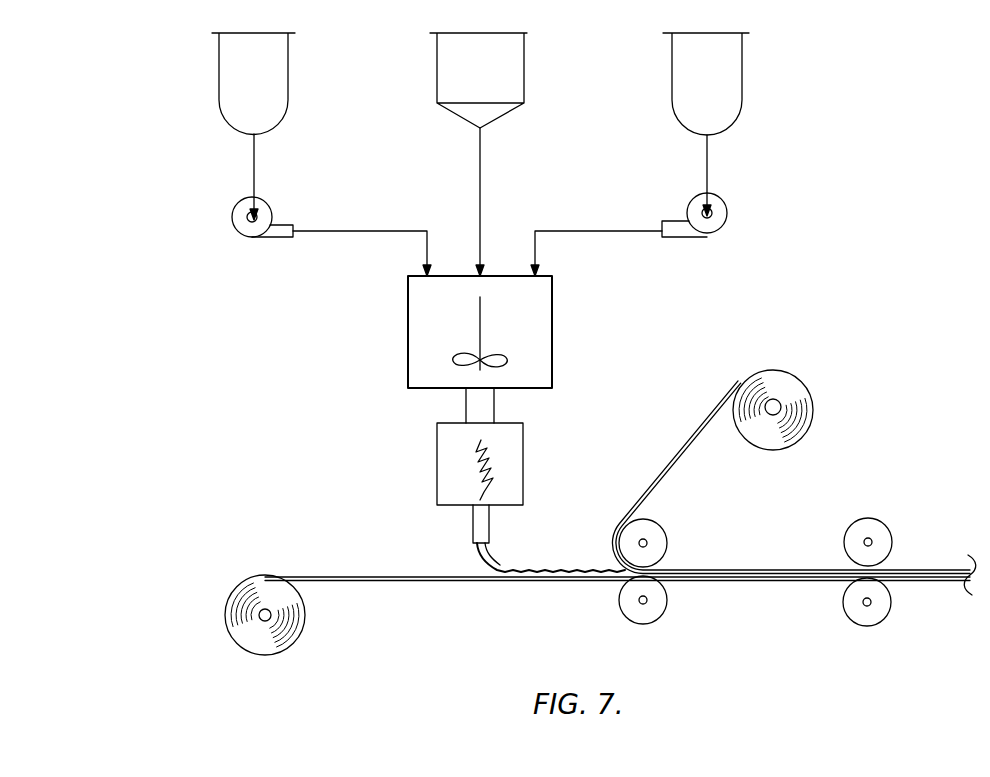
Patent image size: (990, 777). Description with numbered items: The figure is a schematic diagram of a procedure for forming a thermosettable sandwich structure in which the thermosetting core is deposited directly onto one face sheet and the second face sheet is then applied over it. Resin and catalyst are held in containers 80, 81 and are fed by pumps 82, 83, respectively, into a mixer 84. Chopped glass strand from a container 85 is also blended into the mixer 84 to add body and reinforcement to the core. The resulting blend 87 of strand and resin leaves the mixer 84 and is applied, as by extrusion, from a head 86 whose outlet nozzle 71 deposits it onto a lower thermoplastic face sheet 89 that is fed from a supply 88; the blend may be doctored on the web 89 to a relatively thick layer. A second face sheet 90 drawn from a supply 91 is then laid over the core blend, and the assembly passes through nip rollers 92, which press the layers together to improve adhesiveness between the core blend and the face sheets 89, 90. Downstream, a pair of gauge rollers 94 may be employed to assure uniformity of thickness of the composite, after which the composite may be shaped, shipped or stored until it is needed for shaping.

The extrusion nozzle 71 is at (472, 523).
The container 80 is at (219, 83).
The container 81 is at (742, 80).
The pump 82 is at (232, 220).
The pump 83 is at (727, 216).
The mixer 84 is at (552, 358).
The container 85 is at (524, 80).
The head 86 is at (523, 485).
The blend 87 is at (497, 562).
The supply 88 is at (303, 625).
The lower thermoplastic face sheet 89 is at (357, 577).
The second face sheet 90 is at (690, 447).
The supply 91 is at (810, 432).
The nip rollers 92 is at (667, 533).
The gauge rollers 94 is at (880, 525).